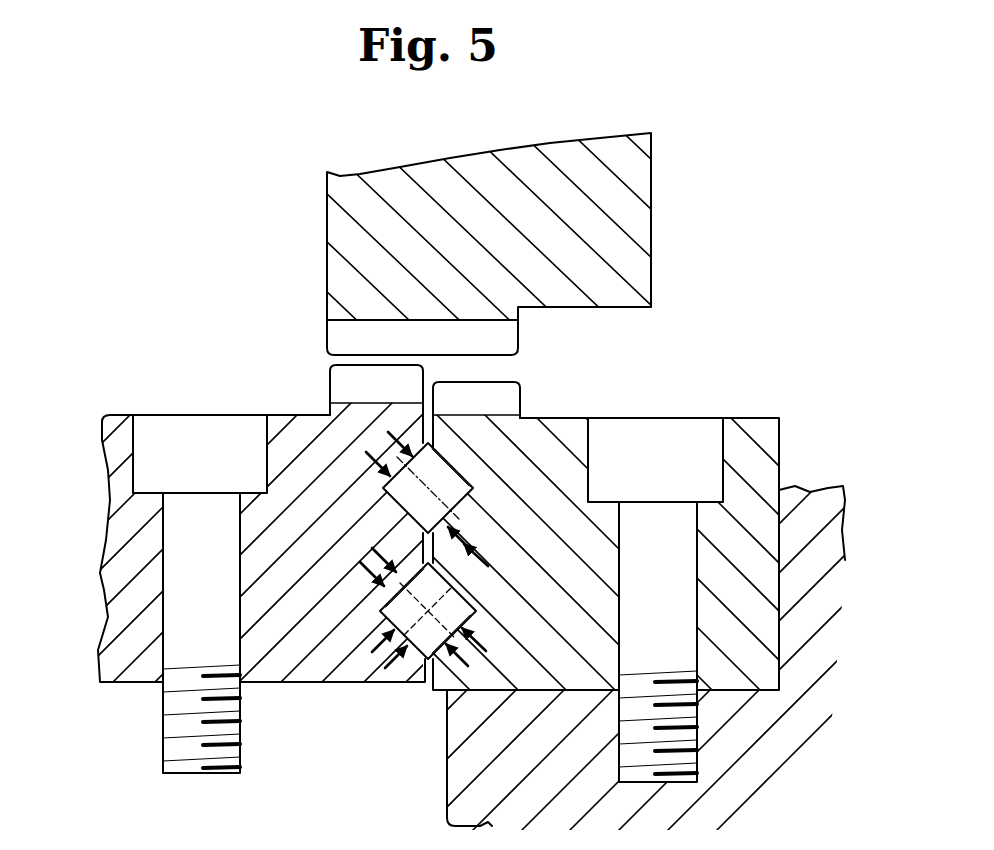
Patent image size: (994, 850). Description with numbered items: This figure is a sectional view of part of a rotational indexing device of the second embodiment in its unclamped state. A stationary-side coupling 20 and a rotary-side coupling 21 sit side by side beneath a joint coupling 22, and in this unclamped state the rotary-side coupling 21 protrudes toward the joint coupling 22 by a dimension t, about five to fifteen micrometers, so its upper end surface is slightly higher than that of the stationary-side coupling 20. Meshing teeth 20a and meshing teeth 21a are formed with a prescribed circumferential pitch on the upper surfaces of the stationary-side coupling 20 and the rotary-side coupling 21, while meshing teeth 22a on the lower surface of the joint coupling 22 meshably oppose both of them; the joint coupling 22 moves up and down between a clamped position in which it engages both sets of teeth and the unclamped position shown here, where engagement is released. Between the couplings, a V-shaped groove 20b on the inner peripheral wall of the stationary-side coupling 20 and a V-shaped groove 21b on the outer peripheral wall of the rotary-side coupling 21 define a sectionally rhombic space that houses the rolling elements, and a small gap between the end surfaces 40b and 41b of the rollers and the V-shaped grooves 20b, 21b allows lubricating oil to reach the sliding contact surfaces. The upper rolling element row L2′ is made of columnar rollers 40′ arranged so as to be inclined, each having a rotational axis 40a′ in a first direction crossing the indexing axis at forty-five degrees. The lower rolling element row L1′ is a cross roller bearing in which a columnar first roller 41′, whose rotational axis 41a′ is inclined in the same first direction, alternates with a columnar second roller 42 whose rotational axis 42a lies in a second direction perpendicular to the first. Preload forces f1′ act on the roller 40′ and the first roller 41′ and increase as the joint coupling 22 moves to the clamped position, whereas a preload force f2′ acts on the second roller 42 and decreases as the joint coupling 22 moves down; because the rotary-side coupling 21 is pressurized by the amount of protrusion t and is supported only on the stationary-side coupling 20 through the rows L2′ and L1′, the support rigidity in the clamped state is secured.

The stationary-side coupling 20 is at (752, 416).
The meshing teeth 20a is at (522, 396).
The V-shaped groove 20b is at (480, 493).
The rotary-side coupling 21 is at (103, 505).
The meshing teeth 21a is at (330, 388).
The V-shaped groove 21b is at (386, 506).
The joint coupling 22 is at (653, 197).
The meshing teeth 22a is at (327, 343).
The columnar roller 40′ is at (392, 492).
The rotational axis 40a′ is at (460, 468).
The end surface 40b is at (440, 430).
The columnar first roller 41′ is at (420, 655).
The rotational axis 41a′ is at (466, 578).
The end surface 41b is at (400, 578).
The columnar second roller 42 is at (456, 700).
The rotational axis 42a is at (392, 645).
The preload force f1′ is at (400, 455).
The preload force f2′ is at (380, 658).
The lower rolling element row L1′ is at (425, 668).
The upper rolling element row L2′ is at (372, 470).
The dimension of protrusion t is at (423, 363).